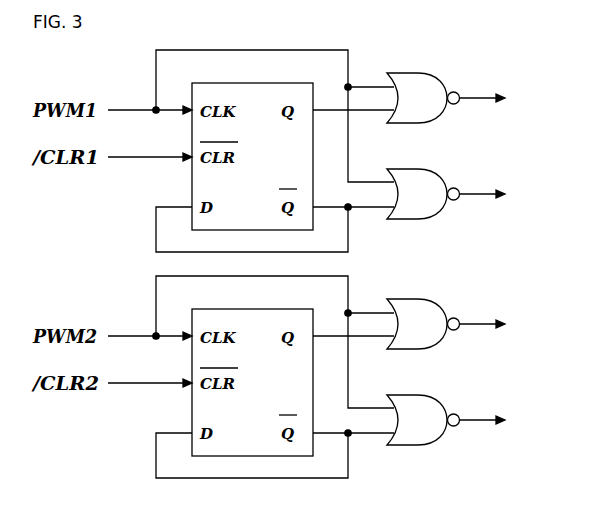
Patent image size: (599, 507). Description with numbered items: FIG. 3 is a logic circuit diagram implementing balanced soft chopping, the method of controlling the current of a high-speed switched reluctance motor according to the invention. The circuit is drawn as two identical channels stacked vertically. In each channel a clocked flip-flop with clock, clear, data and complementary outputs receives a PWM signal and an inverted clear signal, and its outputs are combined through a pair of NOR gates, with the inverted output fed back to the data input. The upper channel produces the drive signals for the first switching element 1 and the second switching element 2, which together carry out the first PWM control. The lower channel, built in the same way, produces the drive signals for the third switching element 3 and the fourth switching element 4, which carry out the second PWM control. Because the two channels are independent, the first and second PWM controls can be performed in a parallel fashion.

The first switching element 1 is at (463, 98).
The second switching element 2 is at (464, 194).
The third switching element 3 is at (464, 324).
The fourth switching element 4 is at (463, 420).